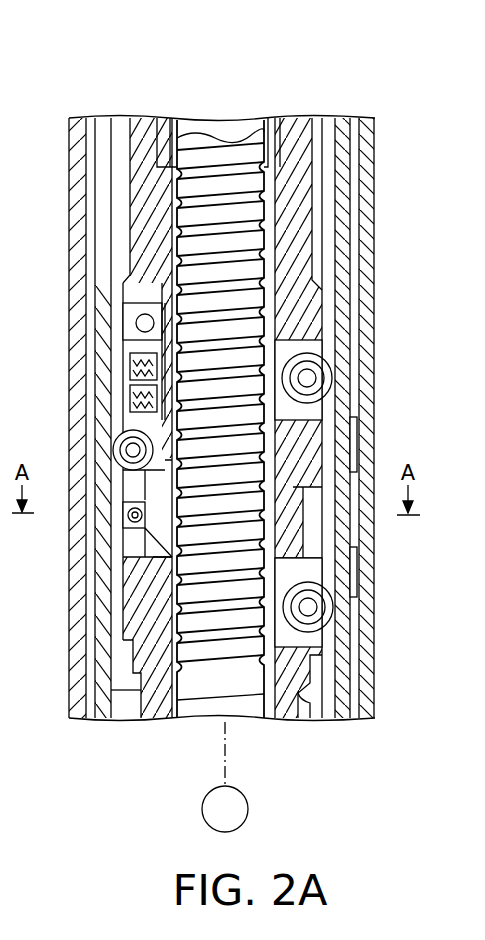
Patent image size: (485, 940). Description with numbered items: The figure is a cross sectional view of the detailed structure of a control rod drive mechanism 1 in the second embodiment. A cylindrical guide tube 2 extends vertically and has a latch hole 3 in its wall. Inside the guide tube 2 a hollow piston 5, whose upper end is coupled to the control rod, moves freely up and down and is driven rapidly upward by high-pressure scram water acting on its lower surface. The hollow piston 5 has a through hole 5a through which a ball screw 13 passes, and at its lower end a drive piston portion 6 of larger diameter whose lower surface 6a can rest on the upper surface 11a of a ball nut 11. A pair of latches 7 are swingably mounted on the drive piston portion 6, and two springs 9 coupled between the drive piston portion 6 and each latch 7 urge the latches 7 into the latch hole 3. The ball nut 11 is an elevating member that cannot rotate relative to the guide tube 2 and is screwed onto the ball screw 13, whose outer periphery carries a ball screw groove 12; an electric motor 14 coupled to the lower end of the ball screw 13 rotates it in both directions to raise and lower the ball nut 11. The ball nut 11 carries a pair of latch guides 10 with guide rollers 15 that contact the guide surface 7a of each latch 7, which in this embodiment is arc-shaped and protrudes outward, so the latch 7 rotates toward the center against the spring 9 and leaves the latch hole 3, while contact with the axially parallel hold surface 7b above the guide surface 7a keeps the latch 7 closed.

The control rod drive mechanism 1 is at (355, 82).
The guide tube 2 is at (100, 657).
The latch hole 3 is at (100, 268).
The hollow piston 5 is at (107, 120).
The through hole 5a is at (178, 195).
The drive piston portion 6 is at (335, 342).
The lower surface 6a is at (335, 598).
The latch 7 is at (131, 425).
The guide surface 7a is at (150, 577).
The hold surface 7b is at (113, 446).
The spring 9 is at (130, 393).
The latch guide 10 is at (118, 555).
The ball nut 11 is at (160, 697).
The upper surface 11a is at (315, 548).
The ball screw groove 12 is at (292, 700).
The ball screw 13 is at (200, 706).
The electric motor 14 is at (248, 805).
The guide roller 15 is at (115, 520).